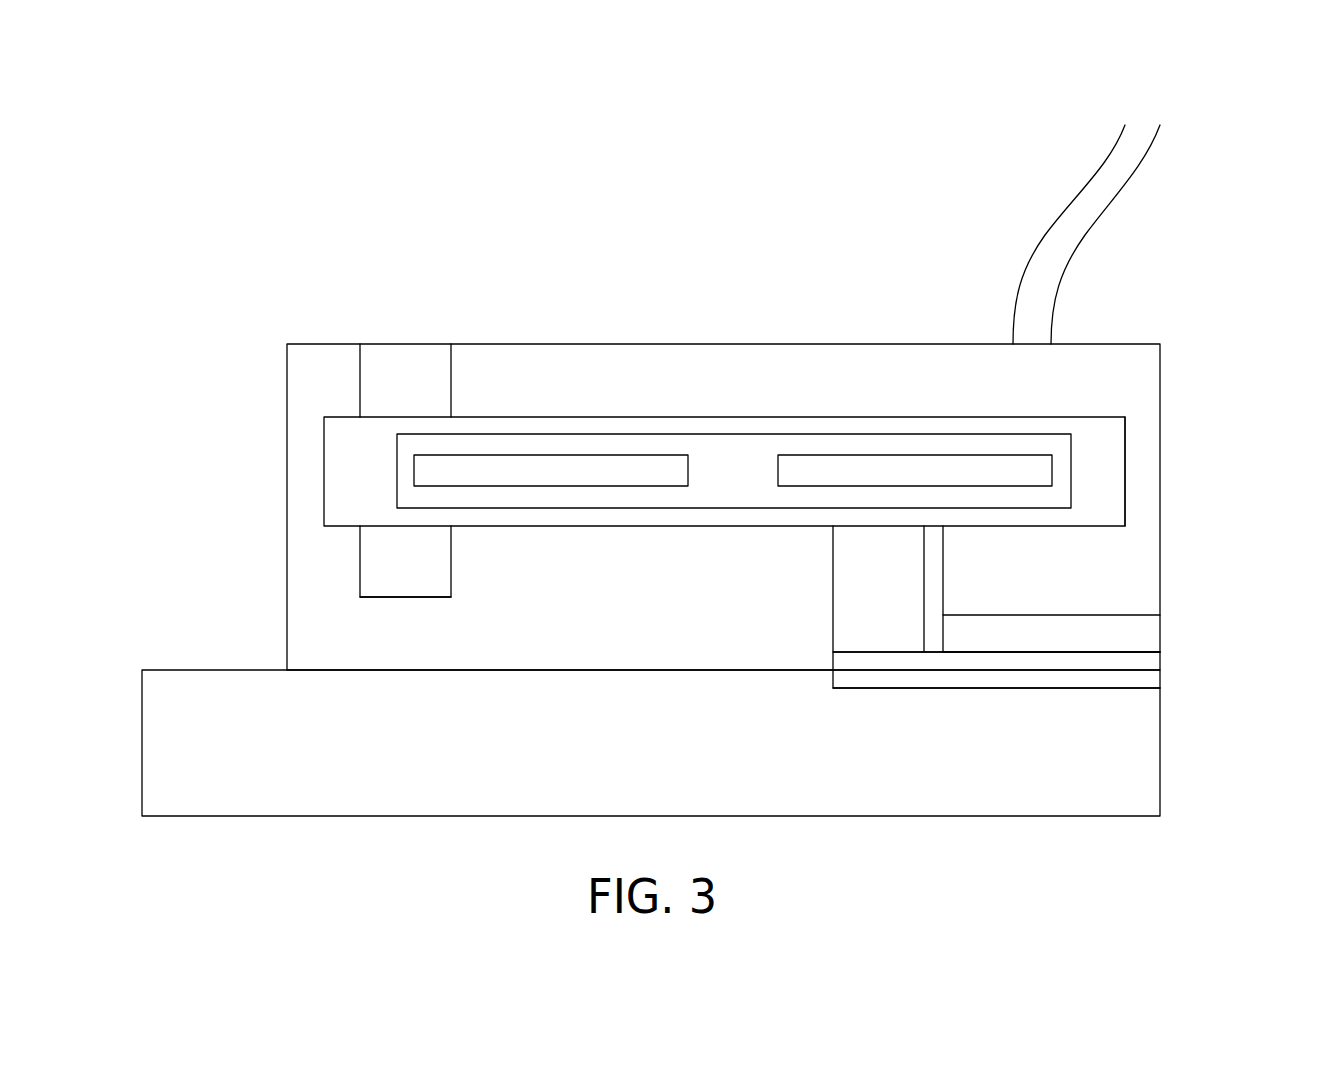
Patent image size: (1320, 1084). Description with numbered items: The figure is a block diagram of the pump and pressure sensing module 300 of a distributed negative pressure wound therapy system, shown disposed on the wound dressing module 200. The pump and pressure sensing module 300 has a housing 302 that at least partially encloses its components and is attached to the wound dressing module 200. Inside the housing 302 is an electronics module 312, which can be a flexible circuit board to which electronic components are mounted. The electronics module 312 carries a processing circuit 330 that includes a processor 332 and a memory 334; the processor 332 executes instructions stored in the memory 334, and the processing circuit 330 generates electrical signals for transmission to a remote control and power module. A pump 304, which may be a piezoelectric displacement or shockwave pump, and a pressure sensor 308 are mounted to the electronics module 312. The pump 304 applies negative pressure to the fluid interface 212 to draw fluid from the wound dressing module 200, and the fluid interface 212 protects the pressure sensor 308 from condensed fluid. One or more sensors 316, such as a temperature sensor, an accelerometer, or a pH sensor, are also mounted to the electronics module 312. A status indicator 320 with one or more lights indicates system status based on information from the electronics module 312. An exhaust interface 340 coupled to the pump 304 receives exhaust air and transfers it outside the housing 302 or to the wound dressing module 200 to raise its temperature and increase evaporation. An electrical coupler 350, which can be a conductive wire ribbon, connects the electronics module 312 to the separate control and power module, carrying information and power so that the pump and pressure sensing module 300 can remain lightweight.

The wound dressing module 200 is at (1160, 745).
The fluid interface 212 is at (1160, 670).
The pump and pressure sensing module 300 is at (638, 284).
The housing 302 is at (287, 417).
The pump 304 is at (1107, 526).
The pressure sensor 308 is at (833, 590).
The electronics module 312 is at (323, 470).
The sensors 316 is at (405, 597).
The status indicator 320 is at (405, 344).
The processing circuit 330 is at (733, 433).
The processor 332 is at (551, 456).
The memory 334 is at (915, 456).
The exhaust interface 340 is at (1107, 615).
The electrical coupler 350 is at (1036, 174).